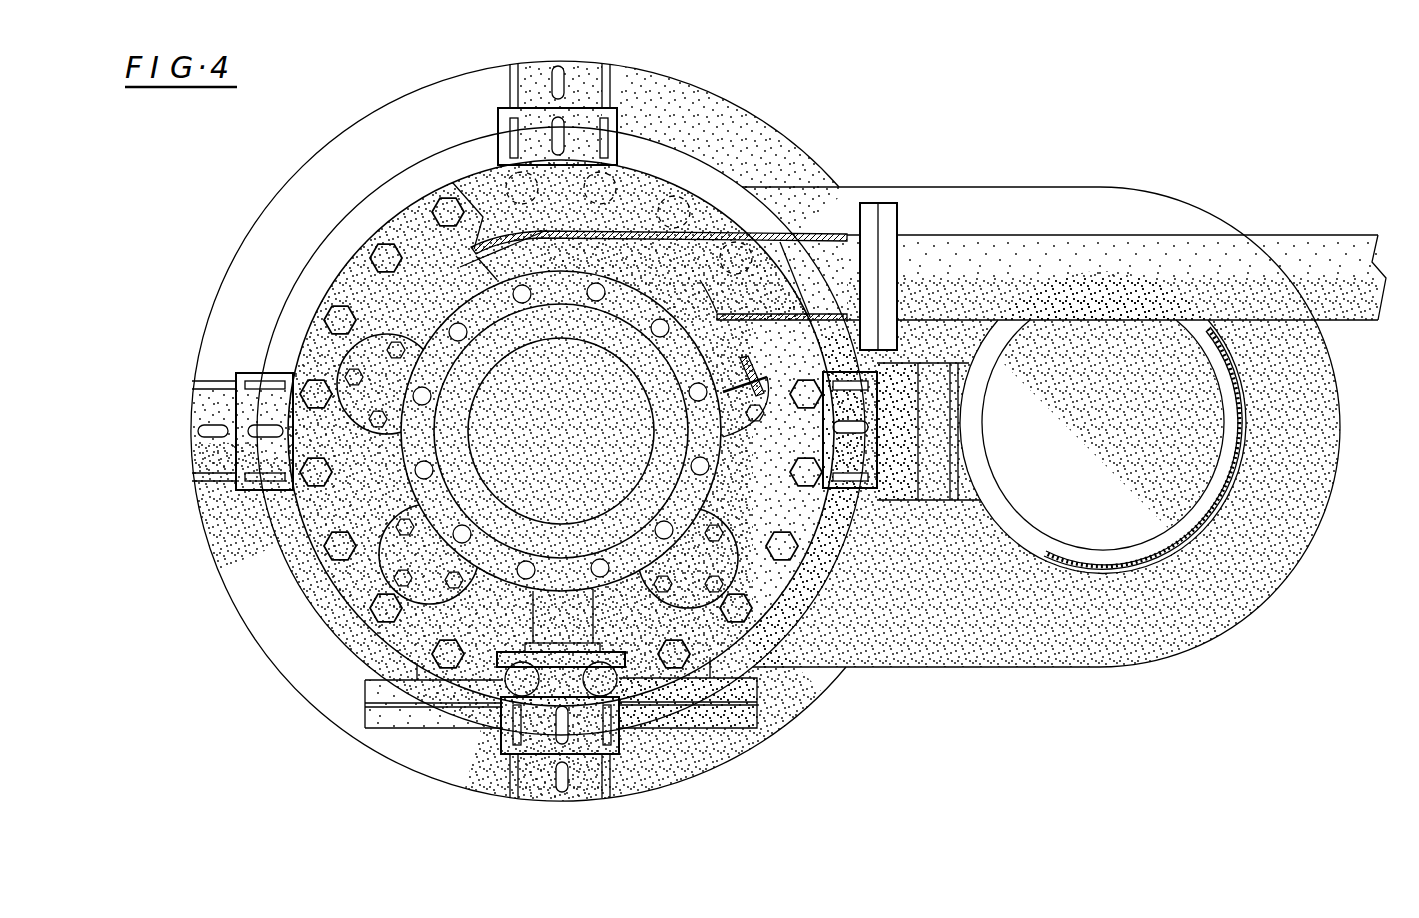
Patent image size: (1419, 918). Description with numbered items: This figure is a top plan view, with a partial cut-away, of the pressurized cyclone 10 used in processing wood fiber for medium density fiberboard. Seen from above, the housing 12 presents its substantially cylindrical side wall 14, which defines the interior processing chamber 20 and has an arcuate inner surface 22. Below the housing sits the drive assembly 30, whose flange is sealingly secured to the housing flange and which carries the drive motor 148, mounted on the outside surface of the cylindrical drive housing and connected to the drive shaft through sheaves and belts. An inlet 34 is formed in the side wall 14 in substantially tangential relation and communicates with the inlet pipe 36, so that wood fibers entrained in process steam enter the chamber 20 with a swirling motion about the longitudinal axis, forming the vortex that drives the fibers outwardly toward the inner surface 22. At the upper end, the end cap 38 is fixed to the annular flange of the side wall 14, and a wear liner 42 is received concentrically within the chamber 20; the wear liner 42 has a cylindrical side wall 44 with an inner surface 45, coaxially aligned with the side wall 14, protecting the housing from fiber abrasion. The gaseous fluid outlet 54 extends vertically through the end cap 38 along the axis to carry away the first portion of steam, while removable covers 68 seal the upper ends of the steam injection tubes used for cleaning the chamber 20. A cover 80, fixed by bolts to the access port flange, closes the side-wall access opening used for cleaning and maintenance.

The pressurized cyclone 10 is at (925, 160).
The housing 12 is at (612, 237).
The side wall 14 is at (548, 234).
The interior processing chamber 20 is at (533, 468).
The inner surface 22 is at (490, 232).
The drive assembly 30 is at (758, 108).
The inlet 34 is at (750, 230).
The inlet pipe 36 is at (1028, 249).
The end cap 38 is at (743, 648).
The wear liner 42 is at (760, 362).
The cylindrical side wall 44 is at (531, 241).
The inner surface 45 is at (695, 356).
The gaseous fluid outlet 54 is at (660, 455).
The removable covers 68 is at (398, 353).
The cover 80 is at (420, 720).
The drive motor 148 is at (1095, 570).